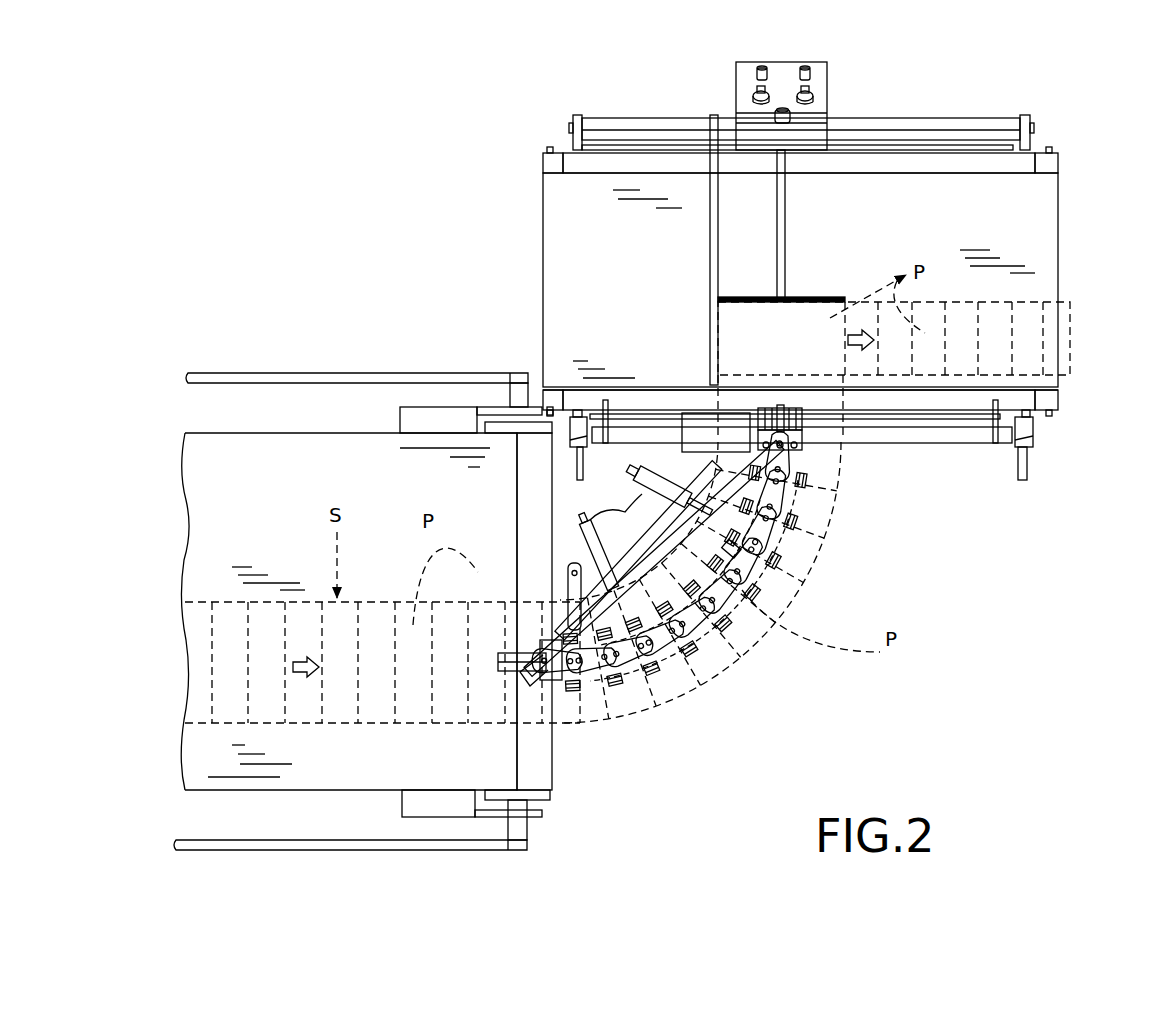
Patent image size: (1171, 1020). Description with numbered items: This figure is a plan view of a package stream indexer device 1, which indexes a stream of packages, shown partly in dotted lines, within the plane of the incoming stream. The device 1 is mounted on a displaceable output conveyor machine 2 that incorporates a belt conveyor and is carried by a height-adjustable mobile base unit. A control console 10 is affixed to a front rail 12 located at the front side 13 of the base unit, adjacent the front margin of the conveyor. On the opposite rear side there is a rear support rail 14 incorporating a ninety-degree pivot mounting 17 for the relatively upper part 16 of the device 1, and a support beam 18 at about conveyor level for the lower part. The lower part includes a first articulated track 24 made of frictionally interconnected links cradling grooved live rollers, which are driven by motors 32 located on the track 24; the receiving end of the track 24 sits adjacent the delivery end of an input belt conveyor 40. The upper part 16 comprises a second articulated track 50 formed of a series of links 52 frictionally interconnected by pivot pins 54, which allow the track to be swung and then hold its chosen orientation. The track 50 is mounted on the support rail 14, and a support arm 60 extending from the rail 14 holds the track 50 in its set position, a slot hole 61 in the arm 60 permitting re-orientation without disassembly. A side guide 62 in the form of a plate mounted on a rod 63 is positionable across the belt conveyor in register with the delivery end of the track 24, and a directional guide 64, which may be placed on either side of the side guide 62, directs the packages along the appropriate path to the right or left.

The package stream indexer device 1 is at (838, 543).
The displaceable output conveyor machine 2 is at (1048, 107).
The control console 10 is at (548, 223).
The front rail 12 is at (647, 123).
The front side 13 is at (1068, 148).
The rear support rail 14 is at (890, 438).
The upper part 16 is at (716, 612).
The 90° pivot mounting 17 is at (1006, 445).
The support beam 18 is at (950, 418).
The first articulated track 24 is at (758, 412).
The motor 32 is at (600, 447).
The input belt conveyor 40 is at (556, 776).
The second articulated track 50 is at (742, 590).
The link 52 is at (680, 624).
The pivot pin 54 is at (698, 610).
The support arm 60 is at (590, 612).
The slot hole 61 is at (557, 677).
The side guide 62 is at (831, 297).
The rod 63 is at (787, 219).
The directional guide 64 is at (710, 267).